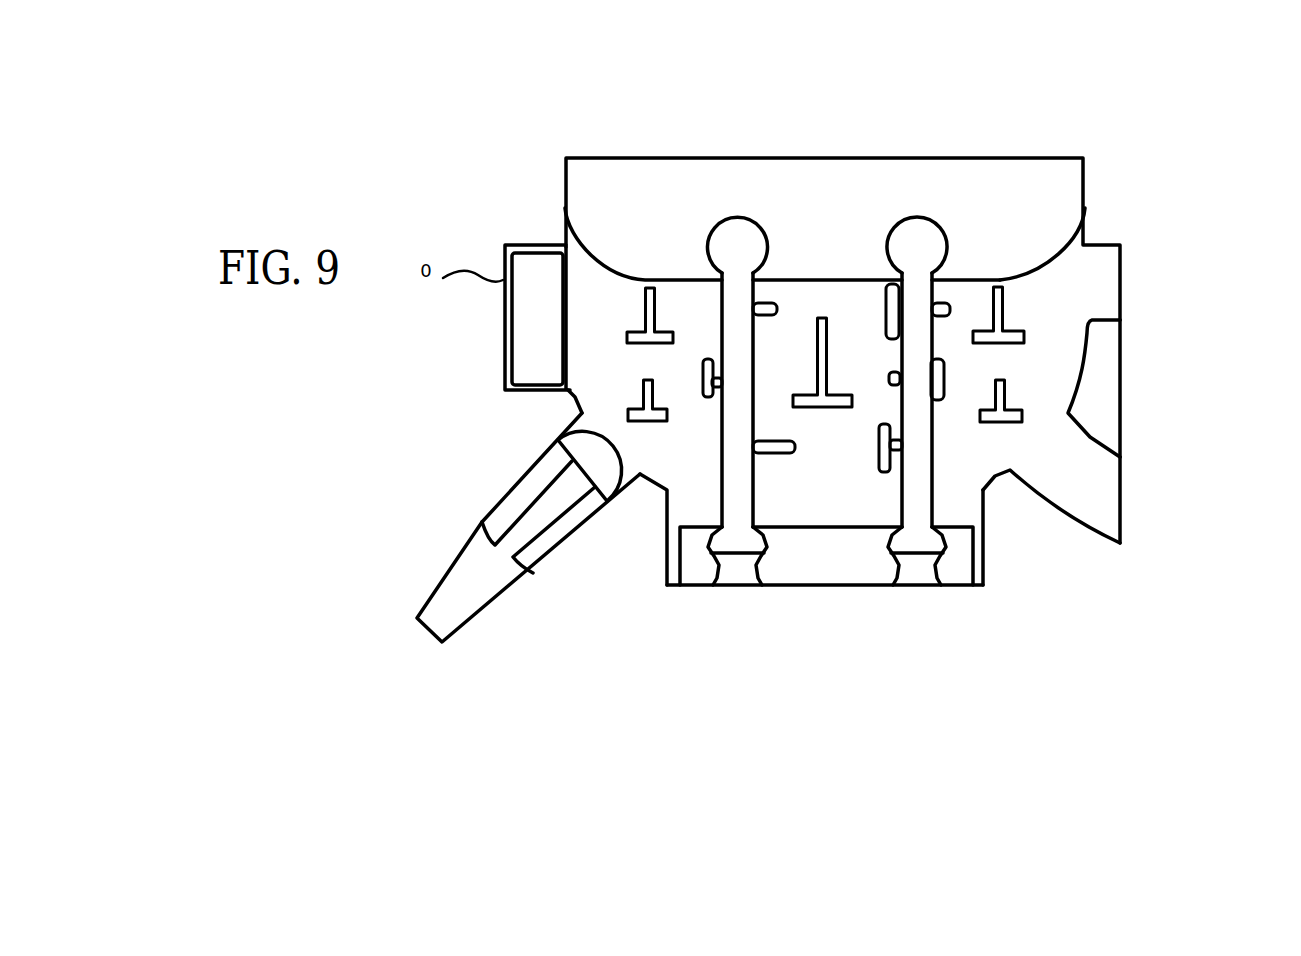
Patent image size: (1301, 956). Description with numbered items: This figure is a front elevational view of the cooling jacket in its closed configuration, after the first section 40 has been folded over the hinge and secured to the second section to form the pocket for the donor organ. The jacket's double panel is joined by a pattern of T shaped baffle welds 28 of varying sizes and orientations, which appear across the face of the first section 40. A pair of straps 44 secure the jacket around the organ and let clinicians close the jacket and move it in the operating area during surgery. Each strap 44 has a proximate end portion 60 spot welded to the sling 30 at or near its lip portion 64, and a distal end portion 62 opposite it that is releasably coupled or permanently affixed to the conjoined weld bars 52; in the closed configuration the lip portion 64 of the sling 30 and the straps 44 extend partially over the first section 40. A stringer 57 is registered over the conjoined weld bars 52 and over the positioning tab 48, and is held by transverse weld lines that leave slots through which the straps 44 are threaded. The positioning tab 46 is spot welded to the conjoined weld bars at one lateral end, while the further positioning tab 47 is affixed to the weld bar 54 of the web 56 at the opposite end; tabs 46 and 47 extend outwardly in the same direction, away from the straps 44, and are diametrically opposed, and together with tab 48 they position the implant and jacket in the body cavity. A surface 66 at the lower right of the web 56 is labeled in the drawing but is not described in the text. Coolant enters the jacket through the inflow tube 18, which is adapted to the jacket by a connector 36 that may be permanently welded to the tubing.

The inflow tube 18 is at (480, 602).
The T shaped baffle welds 28 is at (593, 408).
The sling 30 is at (967, 190).
The connector 36 is at (552, 547).
The first section 40 is at (745, 448).
The strap 44 is at (757, 487).
The positioning tab 46 is at (508, 315).
The further positioning tab 47 is at (1123, 380).
The further positioning tab 48 is at (842, 592).
The further weld bar 52 is at (687, 587).
The weld bar 54 is at (1123, 432).
The web 56 is at (1097, 302).
The stringer 57 is at (735, 588).
The proximate end portion 60 is at (913, 243).
The distal end portion 62 is at (1052, 676).
The lip portion 64 is at (988, 240).
The inclined surface 66 is at (1048, 448).